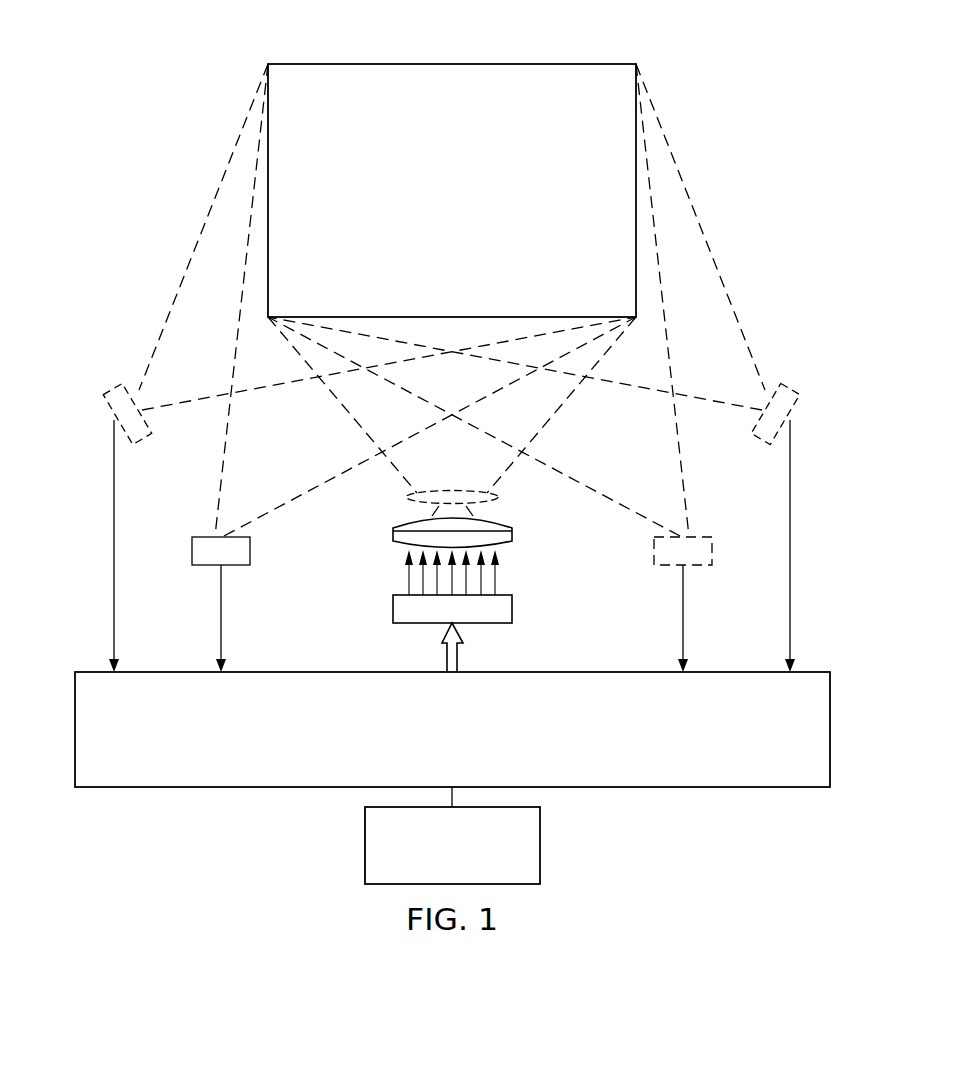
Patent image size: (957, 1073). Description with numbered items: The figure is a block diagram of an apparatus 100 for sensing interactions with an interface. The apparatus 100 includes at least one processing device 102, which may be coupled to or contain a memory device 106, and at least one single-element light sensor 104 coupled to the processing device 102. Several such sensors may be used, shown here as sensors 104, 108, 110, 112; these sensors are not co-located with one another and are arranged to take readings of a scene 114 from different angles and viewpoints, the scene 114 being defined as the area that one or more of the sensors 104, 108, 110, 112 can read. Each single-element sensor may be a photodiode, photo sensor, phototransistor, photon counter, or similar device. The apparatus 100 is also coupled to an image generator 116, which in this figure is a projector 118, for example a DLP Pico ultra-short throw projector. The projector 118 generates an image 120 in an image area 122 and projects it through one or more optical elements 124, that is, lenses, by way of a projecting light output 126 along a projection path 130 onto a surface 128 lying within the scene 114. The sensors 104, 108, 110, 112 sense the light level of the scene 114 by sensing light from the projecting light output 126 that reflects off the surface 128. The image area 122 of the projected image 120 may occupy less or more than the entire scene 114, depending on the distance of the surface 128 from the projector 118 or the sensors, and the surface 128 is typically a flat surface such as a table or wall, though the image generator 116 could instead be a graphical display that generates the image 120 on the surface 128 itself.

The apparatus 100 is at (745, 70).
The processing device 102 is at (434, 757).
The single-element light sensor 104 is at (192, 552).
The memory device 106 is at (365, 854).
The single-element sensor 108 is at (712, 560).
The single-element sensor 110 is at (130, 442).
The single-element sensor 112 is at (773, 442).
The scene 114 is at (214, 140).
The image generator 116 is at (512, 603).
The projector 118 is at (393, 606).
The image 120 is at (434, 203).
The image area 122 is at (452, 168).
The optical element 124 is at (393, 530).
The projecting light output 126 is at (480, 476).
The surface 128 is at (754, 155).
The projection path 130 is at (406, 498).